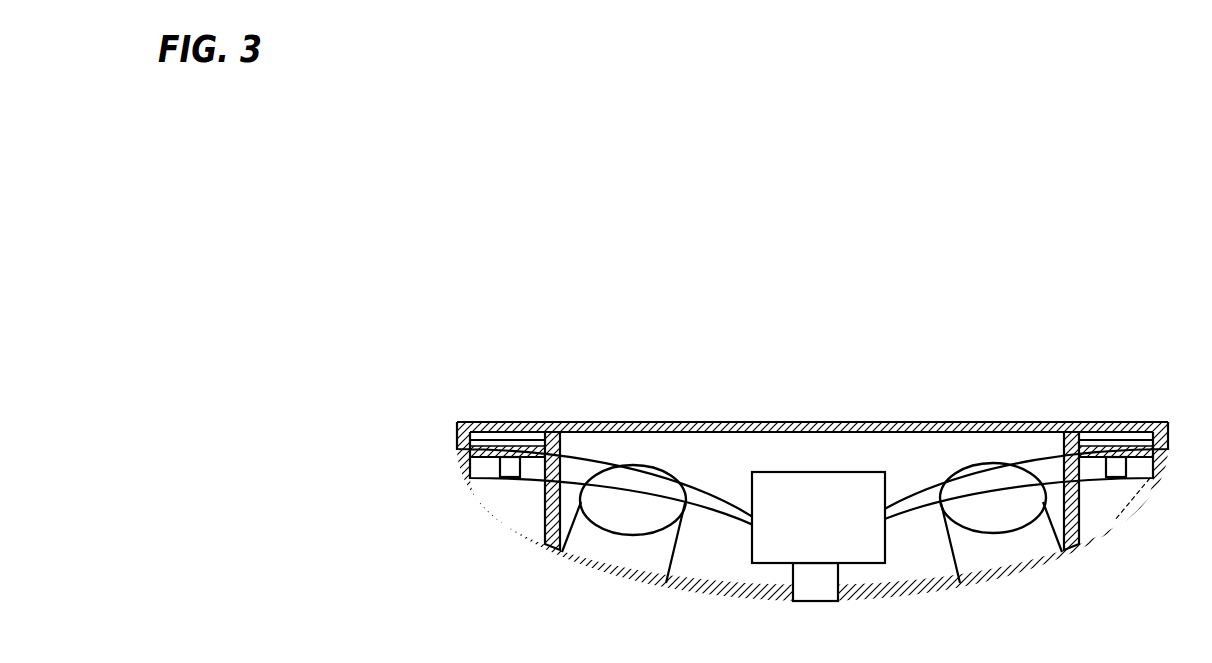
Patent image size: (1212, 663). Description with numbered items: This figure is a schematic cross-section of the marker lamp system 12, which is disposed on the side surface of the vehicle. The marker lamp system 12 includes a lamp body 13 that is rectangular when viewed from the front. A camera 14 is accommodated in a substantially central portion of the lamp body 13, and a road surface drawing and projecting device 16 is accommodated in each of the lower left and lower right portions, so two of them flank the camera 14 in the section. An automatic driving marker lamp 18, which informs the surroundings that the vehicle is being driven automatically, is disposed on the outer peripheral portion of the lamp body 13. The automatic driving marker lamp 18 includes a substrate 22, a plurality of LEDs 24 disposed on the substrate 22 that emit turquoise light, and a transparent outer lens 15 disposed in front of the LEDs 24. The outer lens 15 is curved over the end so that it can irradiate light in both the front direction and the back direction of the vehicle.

The marker lamp system 12 is at (793, 408).
The lamp body 13 is at (822, 428).
The camera 14 is at (762, 468).
The outer lens 15 is at (520, 537).
The road surface drawing and projecting device 16 is at (632, 466).
The automatic driving marker lamp 18 is at (502, 528).
The substrate 22 is at (518, 450).
The LED 24 is at (508, 479).